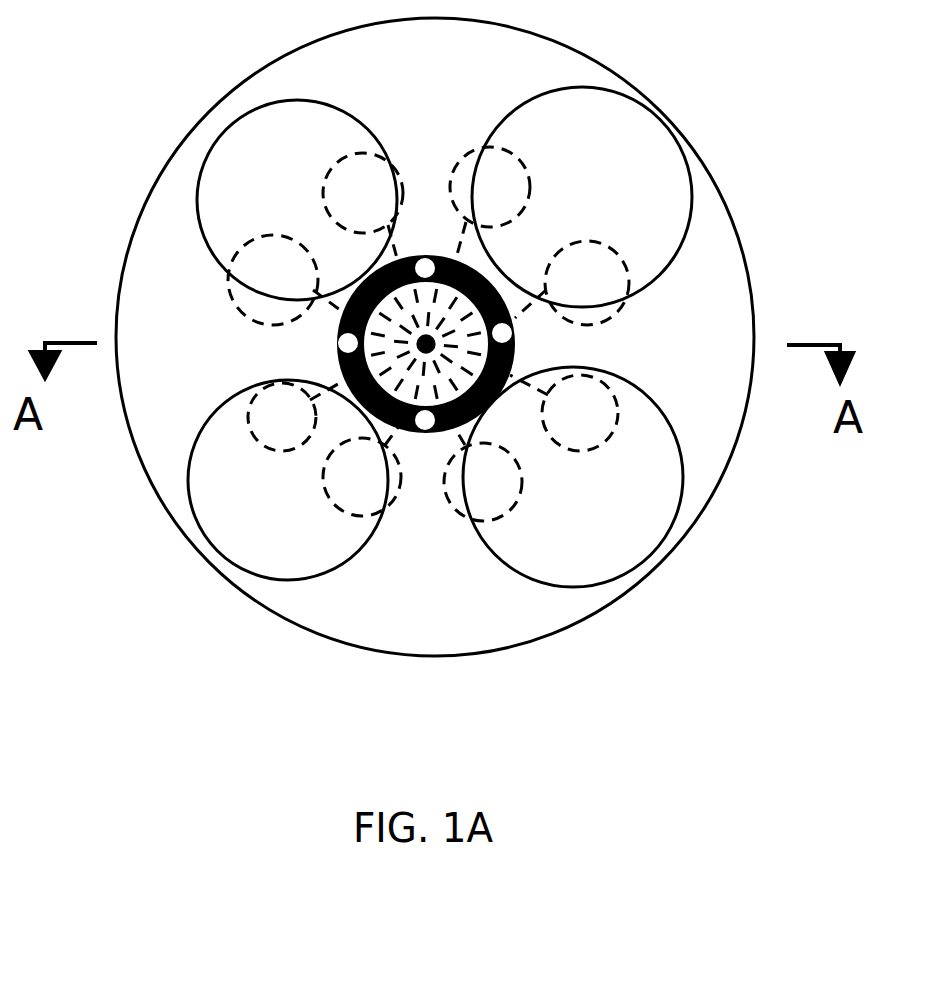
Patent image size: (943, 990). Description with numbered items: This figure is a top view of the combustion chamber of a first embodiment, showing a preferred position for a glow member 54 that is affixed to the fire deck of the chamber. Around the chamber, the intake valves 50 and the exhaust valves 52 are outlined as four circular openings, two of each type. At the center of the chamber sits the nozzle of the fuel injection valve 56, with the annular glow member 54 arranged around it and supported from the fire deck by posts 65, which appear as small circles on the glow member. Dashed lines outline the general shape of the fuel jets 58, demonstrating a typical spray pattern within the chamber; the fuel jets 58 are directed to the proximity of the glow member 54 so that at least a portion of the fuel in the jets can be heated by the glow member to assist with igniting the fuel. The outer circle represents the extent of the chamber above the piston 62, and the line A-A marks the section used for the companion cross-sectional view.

The intake valves 50 is at (657, 347).
The exhaust valves 52 is at (209, 345).
The glow member 54 is at (597, 267).
The fuel injection valve 56 is at (590, 214).
The fuel jets 58 is at (320, 334).
The piston 62 is at (383, 337).
The posts 65 is at (400, 428).